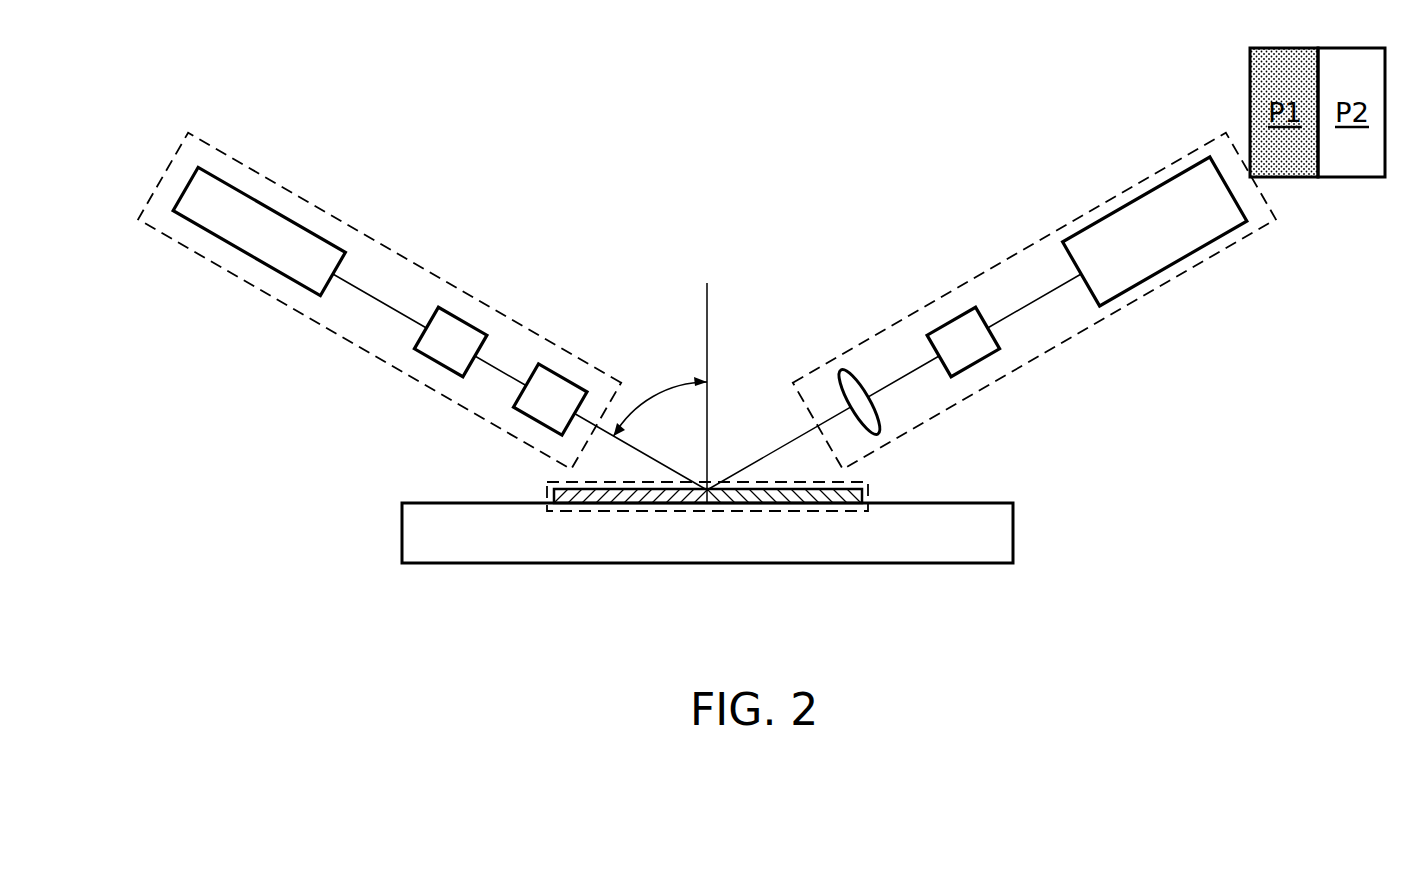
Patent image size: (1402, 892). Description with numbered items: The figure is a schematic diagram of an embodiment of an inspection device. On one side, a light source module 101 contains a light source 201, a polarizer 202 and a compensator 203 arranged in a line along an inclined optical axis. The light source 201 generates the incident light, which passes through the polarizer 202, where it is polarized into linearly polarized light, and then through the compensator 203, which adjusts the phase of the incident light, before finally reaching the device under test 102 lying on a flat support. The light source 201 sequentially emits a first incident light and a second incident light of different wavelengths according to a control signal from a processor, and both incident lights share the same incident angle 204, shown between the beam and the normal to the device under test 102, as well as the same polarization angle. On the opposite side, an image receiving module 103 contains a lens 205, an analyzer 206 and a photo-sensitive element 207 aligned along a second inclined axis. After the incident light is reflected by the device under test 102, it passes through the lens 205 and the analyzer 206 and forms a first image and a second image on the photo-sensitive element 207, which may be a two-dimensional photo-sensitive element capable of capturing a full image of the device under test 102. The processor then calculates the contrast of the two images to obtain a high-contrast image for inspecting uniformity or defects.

The light source module 101 is at (165, 177).
The device under test 102 is at (577, 512).
The image receiving module 103 is at (1150, 176).
The light source 201 is at (248, 253).
The polarizer 202 is at (438, 365).
The compensator 203 is at (535, 420).
The incident angle 204 is at (661, 394).
The lens 205 is at (885, 430).
The analyzer 206 is at (977, 363).
The photo-sensitive element 207 is at (1175, 265).